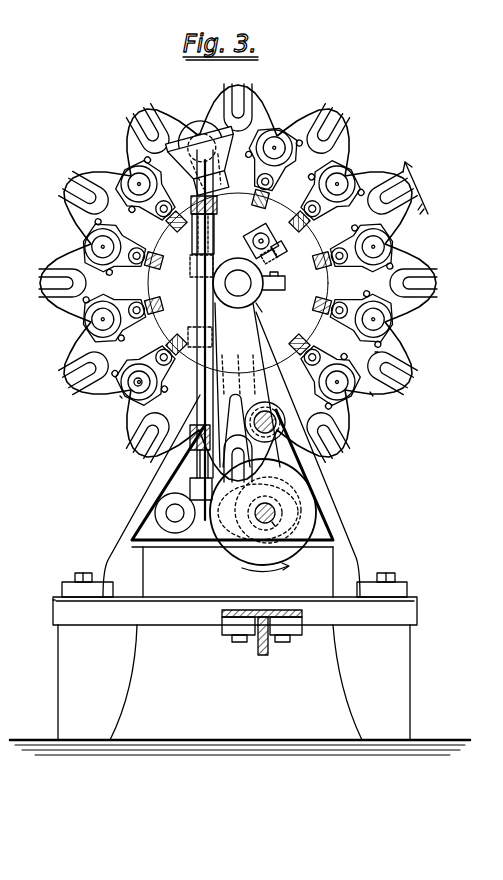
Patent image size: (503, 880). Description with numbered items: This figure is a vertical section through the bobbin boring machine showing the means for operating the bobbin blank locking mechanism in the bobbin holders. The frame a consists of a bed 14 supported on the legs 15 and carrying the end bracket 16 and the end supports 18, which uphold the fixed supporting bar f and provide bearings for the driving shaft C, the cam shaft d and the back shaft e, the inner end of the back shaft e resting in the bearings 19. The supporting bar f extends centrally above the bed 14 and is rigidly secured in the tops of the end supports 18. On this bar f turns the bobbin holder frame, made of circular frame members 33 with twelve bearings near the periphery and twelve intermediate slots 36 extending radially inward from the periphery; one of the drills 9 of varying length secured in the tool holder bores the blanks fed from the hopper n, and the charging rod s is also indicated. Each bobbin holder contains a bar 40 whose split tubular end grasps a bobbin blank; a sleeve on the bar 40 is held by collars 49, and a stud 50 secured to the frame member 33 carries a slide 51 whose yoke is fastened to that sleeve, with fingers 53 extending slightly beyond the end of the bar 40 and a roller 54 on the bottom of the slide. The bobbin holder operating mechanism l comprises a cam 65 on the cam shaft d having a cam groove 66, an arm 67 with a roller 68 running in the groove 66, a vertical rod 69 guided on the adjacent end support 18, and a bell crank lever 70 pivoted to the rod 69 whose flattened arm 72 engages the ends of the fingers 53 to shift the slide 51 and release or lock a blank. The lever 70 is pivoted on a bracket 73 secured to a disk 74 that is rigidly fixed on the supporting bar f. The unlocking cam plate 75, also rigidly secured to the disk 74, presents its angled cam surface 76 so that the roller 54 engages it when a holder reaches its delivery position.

The drill 9 is at (128, 137).
The bed 14 is at (418, 612).
The legs 15 is at (62, 661).
The end bracket 16 is at (258, 645).
The end supports 18 is at (120, 551).
The bearings 19 is at (270, 283).
The circular frame members 33 is at (373, 396).
The intermediate slots 36 is at (75, 188).
The bar 40 is at (273, 148).
The collars 49 is at (129, 401).
The stud 50 is at (160, 352).
The slide 51 is at (160, 372).
The fingers 53 is at (122, 398).
The roller 54 is at (163, 306).
The cam 65 is at (300, 508).
The cam groove 66 is at (242, 548).
The arm 67 is at (190, 489).
The roller 68 is at (266, 503).
The rod 69 is at (198, 460).
The bell crank lever 70 is at (212, 190).
The flattened arm 72 is at (201, 150).
The bracket 73 is at (193, 265).
The disk 74 is at (264, 300).
The cam plate 75 is at (276, 256).
The cam surface 76 is at (253, 230).
The bobbin holder operating mechanism l is at (196, 252).
The hopper n is at (284, 249).
The charging rod s is at (238, 283).
The fixed supporting bar f is at (247, 385).
The driving shaft C is at (270, 415).
The back shaft e is at (170, 514).
The cam shaft d is at (272, 522).
The frame a is at (54, 600).